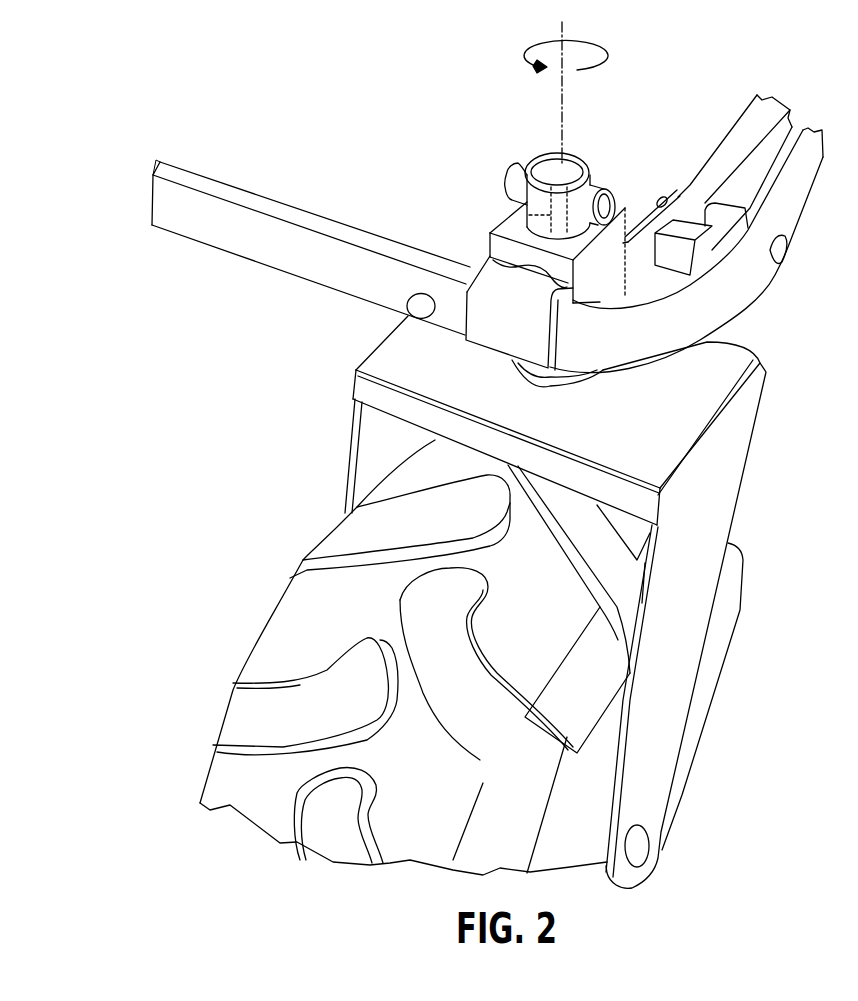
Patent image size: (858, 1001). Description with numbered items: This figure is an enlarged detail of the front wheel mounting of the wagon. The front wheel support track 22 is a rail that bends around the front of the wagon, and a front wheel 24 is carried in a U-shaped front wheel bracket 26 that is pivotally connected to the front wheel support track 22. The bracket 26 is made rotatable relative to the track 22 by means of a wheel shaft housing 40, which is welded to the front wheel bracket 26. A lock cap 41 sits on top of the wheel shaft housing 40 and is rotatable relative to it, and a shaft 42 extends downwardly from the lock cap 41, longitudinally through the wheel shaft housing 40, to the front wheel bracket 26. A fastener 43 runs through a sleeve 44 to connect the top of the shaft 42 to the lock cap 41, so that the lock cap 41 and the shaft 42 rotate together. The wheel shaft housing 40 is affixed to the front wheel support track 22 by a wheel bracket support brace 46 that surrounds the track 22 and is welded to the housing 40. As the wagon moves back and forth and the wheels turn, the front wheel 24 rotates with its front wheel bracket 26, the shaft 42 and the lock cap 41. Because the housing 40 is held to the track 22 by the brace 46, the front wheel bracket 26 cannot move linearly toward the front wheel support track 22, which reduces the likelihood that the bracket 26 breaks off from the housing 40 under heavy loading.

The front wheel support track 22 is at (223, 189).
The front wheel 24 is at (287, 622).
The front wheel bracket 26 is at (735, 470).
The wheel shaft housing 40 is at (488, 233).
The lock cap 41 is at (553, 152).
The shaft 42 is at (550, 215).
The fastener 43 is at (615, 205).
The sleeve 44 is at (513, 163).
The wheel bracket support brace 46 is at (490, 333).